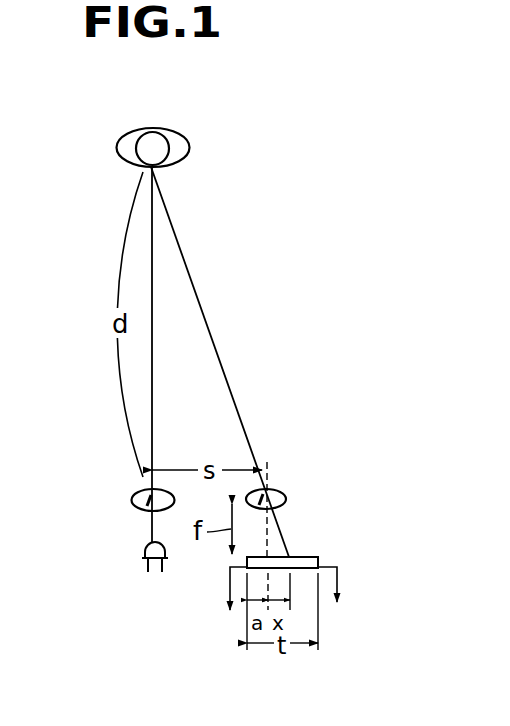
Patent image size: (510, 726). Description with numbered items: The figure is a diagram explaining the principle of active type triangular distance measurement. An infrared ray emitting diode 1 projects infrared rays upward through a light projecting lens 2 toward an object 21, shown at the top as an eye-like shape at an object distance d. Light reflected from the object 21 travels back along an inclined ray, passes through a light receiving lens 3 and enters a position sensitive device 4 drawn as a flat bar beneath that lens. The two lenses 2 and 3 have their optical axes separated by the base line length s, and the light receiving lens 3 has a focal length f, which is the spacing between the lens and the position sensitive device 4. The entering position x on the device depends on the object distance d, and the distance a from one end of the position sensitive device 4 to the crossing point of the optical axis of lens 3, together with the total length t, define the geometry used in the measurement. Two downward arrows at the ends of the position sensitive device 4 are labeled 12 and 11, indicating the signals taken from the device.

The infrared ray emitting diode 1 is at (143, 550).
The light projecting lens 2 is at (134, 496).
The light receiving lens 3 is at (284, 497).
The position sensitive device 4 is at (302, 557).
The output signal 11 is at (349, 584).
The output signal 12 is at (222, 588).
The object 21 is at (189, 152).